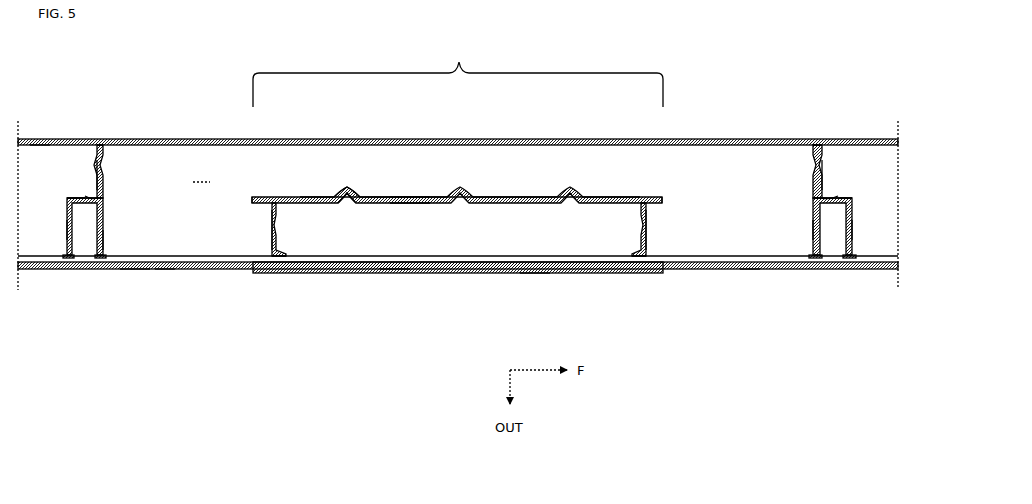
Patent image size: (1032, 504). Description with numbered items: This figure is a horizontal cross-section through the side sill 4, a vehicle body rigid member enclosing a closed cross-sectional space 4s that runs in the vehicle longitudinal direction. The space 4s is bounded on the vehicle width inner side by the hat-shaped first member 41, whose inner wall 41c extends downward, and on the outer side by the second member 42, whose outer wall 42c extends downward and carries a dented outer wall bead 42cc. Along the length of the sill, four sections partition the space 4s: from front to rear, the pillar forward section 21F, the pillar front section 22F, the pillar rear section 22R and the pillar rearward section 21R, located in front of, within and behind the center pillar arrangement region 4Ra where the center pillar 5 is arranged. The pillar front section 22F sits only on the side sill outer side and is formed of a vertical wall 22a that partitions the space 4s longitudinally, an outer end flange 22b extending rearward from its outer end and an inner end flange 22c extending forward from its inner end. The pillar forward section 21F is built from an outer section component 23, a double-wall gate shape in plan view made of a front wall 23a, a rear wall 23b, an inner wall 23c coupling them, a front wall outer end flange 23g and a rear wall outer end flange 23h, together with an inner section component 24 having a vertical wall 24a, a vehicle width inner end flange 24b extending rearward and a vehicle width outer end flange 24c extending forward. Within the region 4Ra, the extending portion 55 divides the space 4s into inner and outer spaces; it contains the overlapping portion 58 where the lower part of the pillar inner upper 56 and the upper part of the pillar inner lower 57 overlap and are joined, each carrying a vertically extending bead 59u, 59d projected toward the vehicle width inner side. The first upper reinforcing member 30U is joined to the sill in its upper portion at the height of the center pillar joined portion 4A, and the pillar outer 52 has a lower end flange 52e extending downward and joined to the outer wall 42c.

The side sill 4 is at (137, 272).
The center pillar joined portion 4A is at (396, 272).
The center pillar arrangement region 4Ra is at (459, 60).
The closed cross-sectional space 4s is at (201, 174).
The first member 41 is at (151, 144).
The inner wall 41c is at (36, 147).
The second member 42 is at (182, 271).
The outer wall 42c is at (748, 271).
The outer wall bead 42cc is at (164, 256).
The battery unit cover plate 5 is at (644, 186).
The pillar rearward section 21R is at (150, 177).
The pillar forward section 21F is at (770, 177).
The pillar rear section 22R is at (266, 233).
The pillar front section 22F is at (651, 230).
The vertical wall 22a is at (278, 230).
The outer end flange 22b is at (280, 254).
The inner end flange 22c is at (254, 206).
The outer section component 23 is at (114, 226).
The front wall 23a is at (104, 238).
The rear wall 23b is at (66, 228).
The inner wall 23c is at (70, 203).
The front wall outer end flange 23g is at (102, 259).
The rear wall outer end flange 23h is at (66, 259).
The inner section component 24 is at (115, 173).
The vertical wall 24a is at (96, 176).
The vehicle width inner end flange 24b is at (106, 150).
The vehicle width outer end flange 24c is at (87, 196).
The first upper reinforcing member 30U is at (232, 258).
The pillar outer 52 is at (621, 275).
The lower end flange 52e is at (533, 274).
The extending portion 55 is at (521, 190).
The pillar inner upper 56 is at (615, 196).
The pillar inner lower 57 is at (408, 205).
The overlapping portion 58 is at (408, 195).
The bead 59u is at (345, 191).
The bead 59d is at (345, 205).